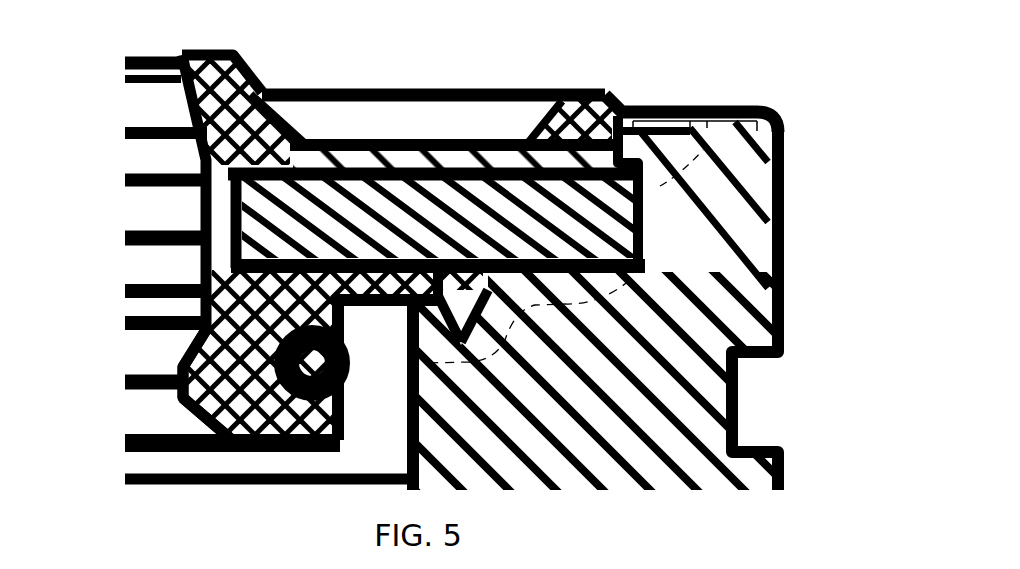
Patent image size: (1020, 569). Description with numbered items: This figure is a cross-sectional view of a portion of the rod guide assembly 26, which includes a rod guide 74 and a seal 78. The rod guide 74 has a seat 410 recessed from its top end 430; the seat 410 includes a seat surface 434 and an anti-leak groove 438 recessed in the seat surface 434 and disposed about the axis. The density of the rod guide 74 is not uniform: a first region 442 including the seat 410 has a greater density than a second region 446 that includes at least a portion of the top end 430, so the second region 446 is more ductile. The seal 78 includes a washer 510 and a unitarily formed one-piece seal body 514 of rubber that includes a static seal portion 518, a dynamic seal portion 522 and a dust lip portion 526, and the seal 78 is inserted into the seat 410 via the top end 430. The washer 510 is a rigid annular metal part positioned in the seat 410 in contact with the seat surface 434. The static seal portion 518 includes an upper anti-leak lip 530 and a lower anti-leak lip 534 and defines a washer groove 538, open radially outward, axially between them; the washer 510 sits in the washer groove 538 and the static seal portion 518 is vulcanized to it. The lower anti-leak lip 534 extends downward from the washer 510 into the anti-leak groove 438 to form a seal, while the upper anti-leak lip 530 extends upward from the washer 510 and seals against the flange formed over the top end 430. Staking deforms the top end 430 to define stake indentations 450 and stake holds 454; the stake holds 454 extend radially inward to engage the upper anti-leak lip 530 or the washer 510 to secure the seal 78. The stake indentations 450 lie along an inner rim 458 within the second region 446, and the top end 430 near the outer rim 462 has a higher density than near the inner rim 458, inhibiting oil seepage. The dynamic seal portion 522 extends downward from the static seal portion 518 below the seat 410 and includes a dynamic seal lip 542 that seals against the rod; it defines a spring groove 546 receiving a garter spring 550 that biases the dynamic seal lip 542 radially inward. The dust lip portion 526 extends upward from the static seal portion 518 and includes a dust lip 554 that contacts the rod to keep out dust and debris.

The rod guide assembly 26 is at (112, 377).
The rod guide 74 is at (704, 466).
The seal 78 is at (292, 68).
The seat 410 is at (553, 279).
The top end 430 is at (732, 110).
The seat surface 434 is at (567, 250).
The anti-leak groove 438 is at (464, 330).
The first region 442 is at (530, 332).
The second region 446 is at (714, 176).
The stake indentations 450 is at (667, 130).
The stake holds 454 is at (603, 106).
The inner rim 458 is at (633, 117).
The outer rim 462 is at (756, 115).
The washer 510 is at (320, 233).
The seal body 514 is at (174, 159).
The static seal portion 518 is at (372, 130).
The dynamic seal portion 522 is at (260, 462).
The dust lip portion 526 is at (182, 107).
The upper anti-leak lip 530 is at (597, 90).
The lower anti-leak lip 534 is at (456, 342).
The washer groove 538 is at (316, 152).
The dynamic seal lip 542 is at (181, 391).
The spring groove 546 is at (250, 454).
The garter spring 550 is at (347, 378).
The dust lip 554 is at (182, 55).